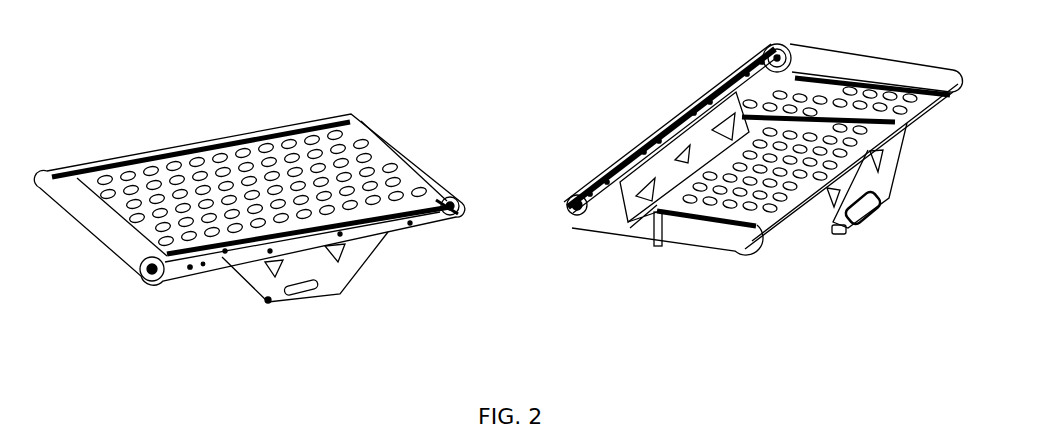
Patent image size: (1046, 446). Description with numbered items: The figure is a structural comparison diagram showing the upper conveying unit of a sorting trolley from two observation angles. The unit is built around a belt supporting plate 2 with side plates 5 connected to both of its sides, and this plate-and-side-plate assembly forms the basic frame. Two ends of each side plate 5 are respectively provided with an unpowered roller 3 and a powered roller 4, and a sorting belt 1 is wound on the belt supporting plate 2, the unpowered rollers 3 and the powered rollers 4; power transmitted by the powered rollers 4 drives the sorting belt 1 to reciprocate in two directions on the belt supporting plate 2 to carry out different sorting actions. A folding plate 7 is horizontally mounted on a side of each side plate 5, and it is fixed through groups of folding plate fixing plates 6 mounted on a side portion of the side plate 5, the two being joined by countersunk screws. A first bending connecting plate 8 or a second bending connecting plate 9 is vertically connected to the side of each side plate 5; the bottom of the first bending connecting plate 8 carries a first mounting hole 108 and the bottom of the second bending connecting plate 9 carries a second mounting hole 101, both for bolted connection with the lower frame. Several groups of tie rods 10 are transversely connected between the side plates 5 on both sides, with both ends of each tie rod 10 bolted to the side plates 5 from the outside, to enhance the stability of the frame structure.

The sorting belt 1 is at (375, 161).
The belt supporting plate 2 is at (439, 194).
The unpowered roller 3 is at (442, 202).
The powered roller 4 is at (137, 262).
The side plate 5 is at (173, 268).
The folding plate fixing plate 6 is at (570, 217).
The folding plate 7 is at (207, 250).
The first bending connecting plate 8 is at (268, 302).
The second bending connecting plate 9 is at (628, 222).
The tie rod 10 is at (735, 252).
The second mounting hole 101 is at (657, 243).
The first mounting hole 108 is at (838, 232).